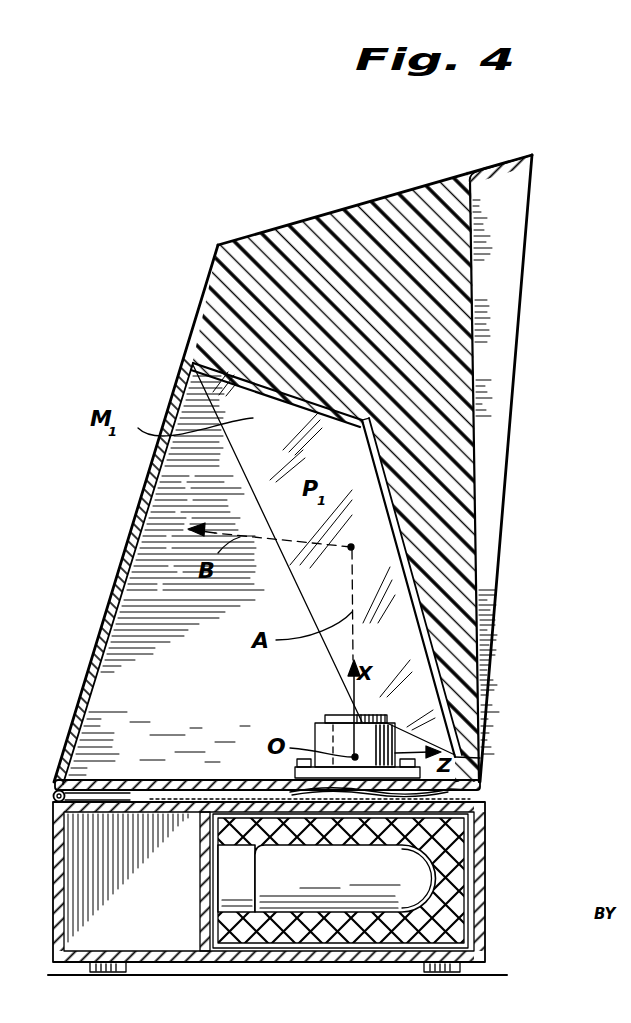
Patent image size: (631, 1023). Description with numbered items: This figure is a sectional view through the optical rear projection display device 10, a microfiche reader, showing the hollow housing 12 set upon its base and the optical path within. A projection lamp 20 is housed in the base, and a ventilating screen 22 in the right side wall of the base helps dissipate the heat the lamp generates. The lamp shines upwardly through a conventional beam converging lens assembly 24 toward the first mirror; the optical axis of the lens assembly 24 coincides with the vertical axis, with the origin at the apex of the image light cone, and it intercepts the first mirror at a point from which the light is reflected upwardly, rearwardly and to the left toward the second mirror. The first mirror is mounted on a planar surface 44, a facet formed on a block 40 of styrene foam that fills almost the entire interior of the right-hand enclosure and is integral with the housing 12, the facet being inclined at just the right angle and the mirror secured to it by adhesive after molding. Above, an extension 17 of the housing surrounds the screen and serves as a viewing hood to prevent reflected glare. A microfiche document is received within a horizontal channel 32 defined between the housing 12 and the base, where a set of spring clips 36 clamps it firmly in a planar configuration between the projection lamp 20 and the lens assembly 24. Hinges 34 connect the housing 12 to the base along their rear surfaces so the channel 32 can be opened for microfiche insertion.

The optical rear projection display device 10 is at (528, 402).
The hollow housing 12 is at (210, 258).
The extension 17 is at (510, 184).
The projection lamp 20 is at (337, 890).
The ventilating screen 22 is at (490, 856).
The beam converging lens assembly 24 is at (317, 737).
The horizontal channel 32 is at (253, 790).
The hinges 34 is at (53, 796).
The spring clips 36 is at (478, 793).
The insulating body 40 is at (311, 214).
The planar surface 44 is at (247, 362).